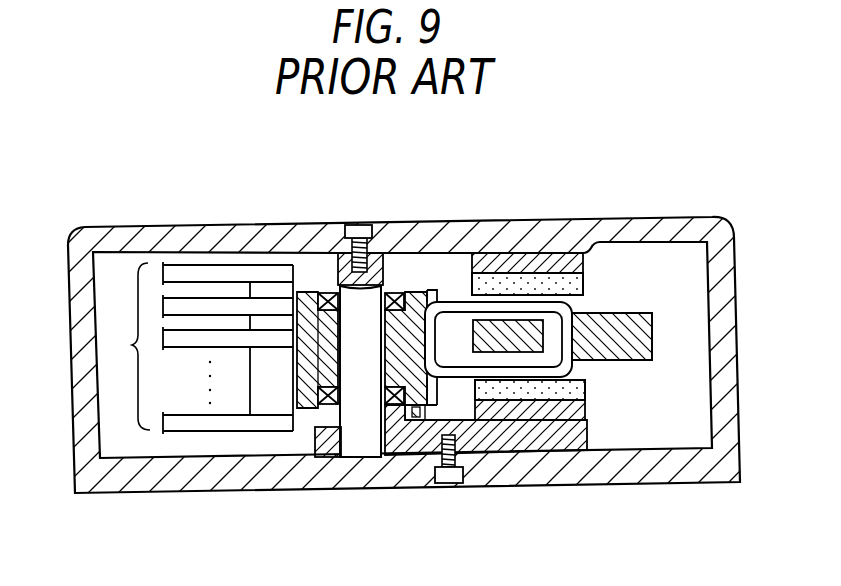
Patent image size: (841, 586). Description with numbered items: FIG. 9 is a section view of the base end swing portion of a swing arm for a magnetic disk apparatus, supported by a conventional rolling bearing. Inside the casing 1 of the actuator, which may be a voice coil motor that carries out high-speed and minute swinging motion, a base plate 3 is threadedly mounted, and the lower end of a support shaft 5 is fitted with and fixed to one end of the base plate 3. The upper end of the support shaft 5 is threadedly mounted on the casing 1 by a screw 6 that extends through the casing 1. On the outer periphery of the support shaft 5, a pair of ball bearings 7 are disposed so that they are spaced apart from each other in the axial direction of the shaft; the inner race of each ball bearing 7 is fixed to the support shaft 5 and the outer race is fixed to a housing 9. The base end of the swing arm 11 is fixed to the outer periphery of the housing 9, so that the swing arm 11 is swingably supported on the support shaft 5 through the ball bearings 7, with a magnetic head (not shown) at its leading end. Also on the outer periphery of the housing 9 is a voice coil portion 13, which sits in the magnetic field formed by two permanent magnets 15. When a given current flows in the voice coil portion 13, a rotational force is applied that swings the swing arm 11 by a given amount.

The casing 1 is at (703, 217).
The base plate 3 is at (590, 437).
The support shaft 5 is at (370, 443).
The screw 6 is at (357, 226).
The ball bearings 7 is at (388, 296).
The housing 9 is at (307, 300).
The swing arm 11 is at (136, 343).
The voice coil portion 13 is at (652, 325).
The permanent magnets 15 is at (586, 278).